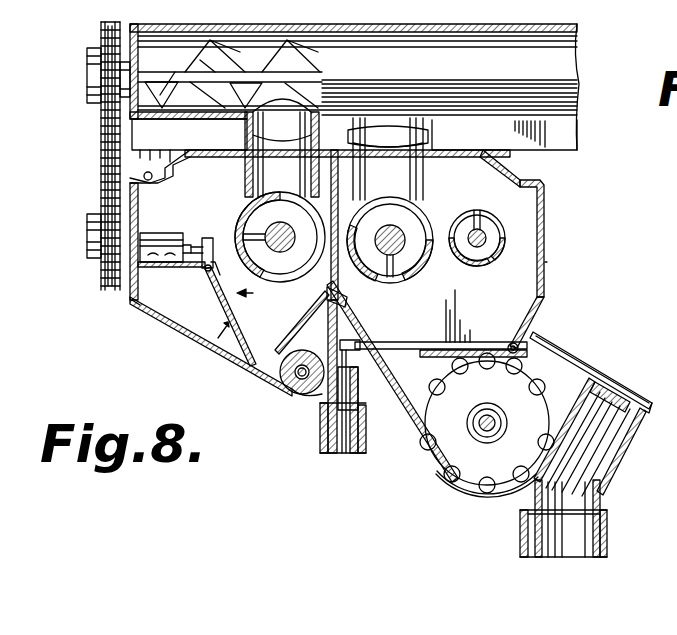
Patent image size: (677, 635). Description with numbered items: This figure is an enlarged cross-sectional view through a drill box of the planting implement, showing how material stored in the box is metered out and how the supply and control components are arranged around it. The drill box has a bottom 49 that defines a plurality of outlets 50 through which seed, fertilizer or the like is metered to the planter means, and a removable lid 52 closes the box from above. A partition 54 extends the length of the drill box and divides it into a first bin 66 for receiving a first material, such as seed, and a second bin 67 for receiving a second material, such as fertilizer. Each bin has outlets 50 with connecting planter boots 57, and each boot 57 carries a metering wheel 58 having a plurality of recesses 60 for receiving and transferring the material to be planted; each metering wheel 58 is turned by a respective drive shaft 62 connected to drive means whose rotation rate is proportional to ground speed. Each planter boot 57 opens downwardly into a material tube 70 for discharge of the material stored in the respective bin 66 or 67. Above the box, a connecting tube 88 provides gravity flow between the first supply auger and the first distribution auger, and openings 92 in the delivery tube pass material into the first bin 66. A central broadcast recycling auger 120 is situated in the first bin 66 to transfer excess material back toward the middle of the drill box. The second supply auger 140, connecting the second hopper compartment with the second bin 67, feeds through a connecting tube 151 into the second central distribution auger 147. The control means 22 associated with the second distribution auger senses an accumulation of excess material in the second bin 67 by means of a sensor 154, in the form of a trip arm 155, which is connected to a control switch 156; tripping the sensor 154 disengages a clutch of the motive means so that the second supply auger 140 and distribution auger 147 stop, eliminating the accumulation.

The second supply auger 140 is at (461, 44).
The connecting tube 151 is at (246, 128).
The connecting tube 88 is at (426, 122).
The removable lid 52 is at (501, 166).
The central broadcast recycling auger 120 is at (477, 210).
The control switch 156 is at (160, 233).
The second central distribution auger 147 is at (242, 219).
The first bin 66 is at (546, 263).
The partition 54 is at (346, 272).
The openings 92 is at (408, 276).
The control means 22 is at (256, 293).
The trip arm 155 is at (238, 328).
The bottom 49 is at (394, 344).
The outlets 50 is at (506, 342).
The second bin 67 is at (176, 322).
The sensor 154 is at (212, 348).
The metering wheel 58 is at (271, 390).
The recesses 60 is at (286, 400).
The drive shaft 62 is at (312, 400).
The boot 57 is at (366, 382).
The material tube 70 is at (320, 446).